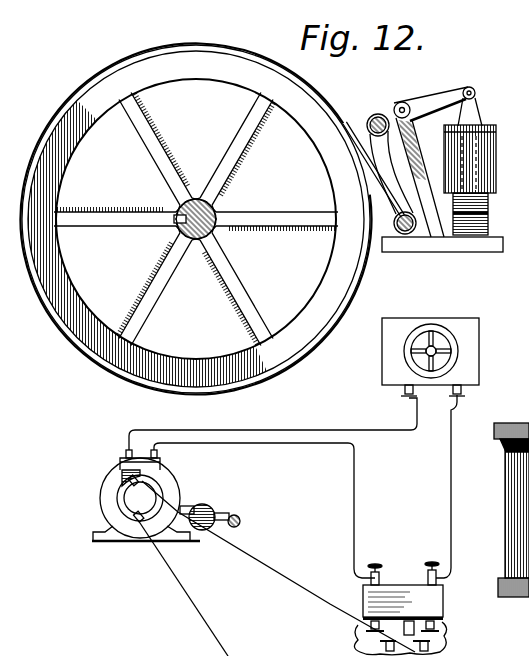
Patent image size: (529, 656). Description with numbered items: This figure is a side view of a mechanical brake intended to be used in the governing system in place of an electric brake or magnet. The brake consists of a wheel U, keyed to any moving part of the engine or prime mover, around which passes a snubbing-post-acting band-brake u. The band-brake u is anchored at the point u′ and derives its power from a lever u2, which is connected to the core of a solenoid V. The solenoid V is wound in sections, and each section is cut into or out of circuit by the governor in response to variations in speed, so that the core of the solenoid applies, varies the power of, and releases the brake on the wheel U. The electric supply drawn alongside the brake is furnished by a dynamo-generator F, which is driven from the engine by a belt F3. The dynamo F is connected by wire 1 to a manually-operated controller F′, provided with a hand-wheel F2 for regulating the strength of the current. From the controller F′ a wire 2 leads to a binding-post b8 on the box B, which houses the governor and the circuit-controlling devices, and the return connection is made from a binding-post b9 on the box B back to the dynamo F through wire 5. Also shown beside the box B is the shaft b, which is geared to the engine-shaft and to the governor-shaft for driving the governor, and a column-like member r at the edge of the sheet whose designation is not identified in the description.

The wheel U is at (196, 62).
The band-brake u is at (322, 110).
The anchorage u′ is at (402, 241).
The lever u2 is at (427, 103).
The solenoid V is at (448, 188).
The manually-operated controller F′ is at (457, 319).
The hand-wheel F2 is at (410, 352).
The dynamo-generator F is at (100, 497).
The belt F3 is at (298, 574).
The wire 1 is at (273, 424).
The wire 2 is at (446, 486).
The wire 5 is at (350, 497).
The box B is at (413, 602).
The shaft b is at (446, 633).
The binding-post b8 is at (433, 563).
The binding-post b9 is at (376, 562).
The column r is at (511, 464).